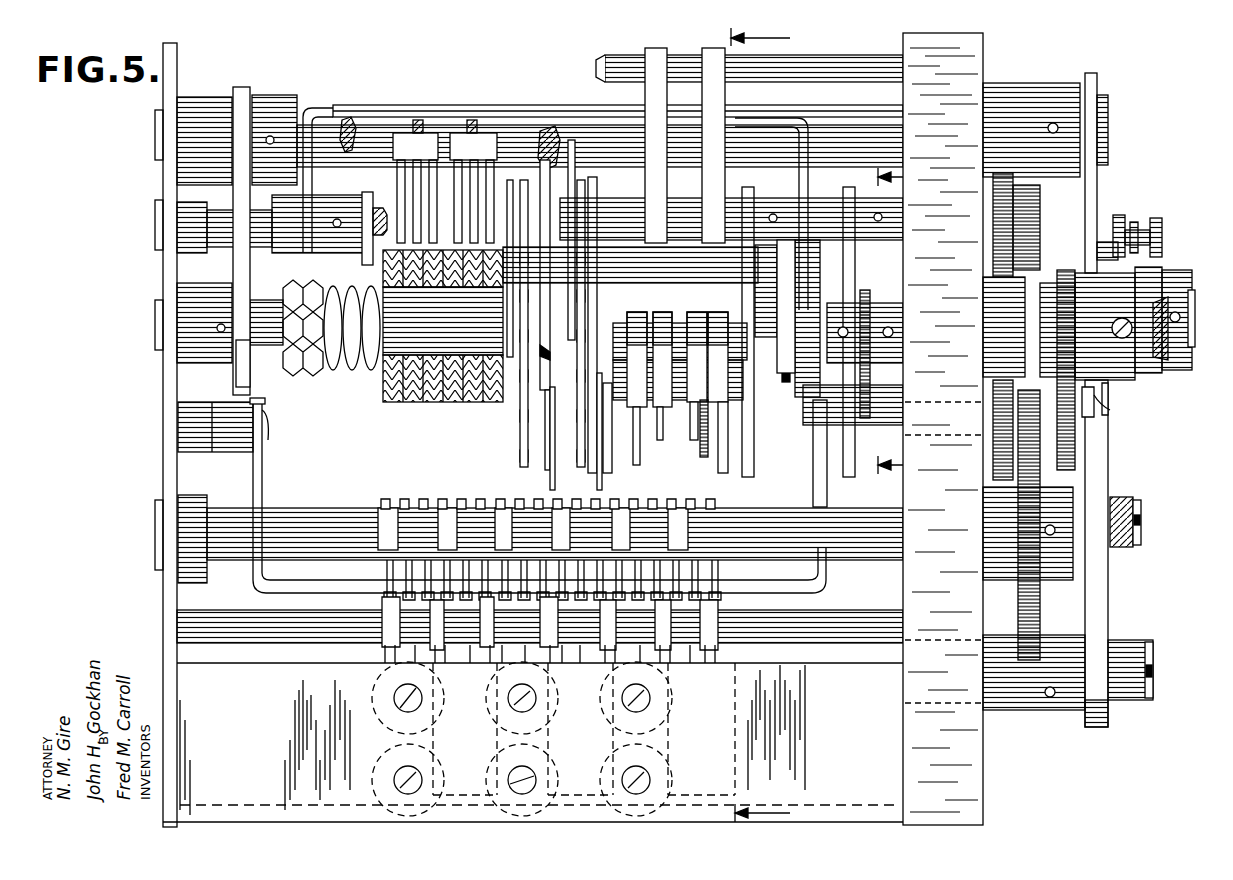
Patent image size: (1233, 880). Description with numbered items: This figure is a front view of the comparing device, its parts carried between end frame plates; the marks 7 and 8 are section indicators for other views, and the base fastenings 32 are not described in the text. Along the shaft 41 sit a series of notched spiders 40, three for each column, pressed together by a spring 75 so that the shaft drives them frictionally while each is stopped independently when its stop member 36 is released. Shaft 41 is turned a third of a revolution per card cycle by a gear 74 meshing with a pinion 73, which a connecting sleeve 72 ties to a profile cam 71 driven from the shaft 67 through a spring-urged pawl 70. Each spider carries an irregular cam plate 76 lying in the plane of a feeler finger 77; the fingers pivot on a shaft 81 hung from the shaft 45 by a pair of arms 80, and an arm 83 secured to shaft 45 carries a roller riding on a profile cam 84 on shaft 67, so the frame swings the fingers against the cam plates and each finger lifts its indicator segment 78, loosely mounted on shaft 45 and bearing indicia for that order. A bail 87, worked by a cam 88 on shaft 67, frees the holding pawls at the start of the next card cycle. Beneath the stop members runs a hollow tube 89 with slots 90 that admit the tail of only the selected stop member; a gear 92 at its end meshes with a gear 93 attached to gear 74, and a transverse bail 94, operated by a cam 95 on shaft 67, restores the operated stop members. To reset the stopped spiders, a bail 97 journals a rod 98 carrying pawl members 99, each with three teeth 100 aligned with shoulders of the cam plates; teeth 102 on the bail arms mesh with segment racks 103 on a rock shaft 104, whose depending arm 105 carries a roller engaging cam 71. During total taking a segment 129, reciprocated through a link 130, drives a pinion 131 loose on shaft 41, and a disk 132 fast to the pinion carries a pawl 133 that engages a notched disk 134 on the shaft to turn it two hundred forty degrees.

The section line 7- 7 is at (751, 426).
The section line 8- 8 is at (891, 323).
The mounting screws 32 is at (672, 762).
The stop member 36 is at (716, 499).
The spider 40 is at (388, 403).
The shaft 41 is at (1196, 350).
The shaft 45 is at (372, 212).
The shaft 67 is at (1148, 345).
The pawl 70 is at (1104, 418).
The profile cam 71 is at (1068, 452).
The connecting sleeve 72 is at (1123, 233).
The pinion 73 is at (1013, 333).
The gear 74 is at (1032, 230).
The spring 75 is at (338, 370).
The cam plate 76 is at (530, 195).
The feeler finger 77 is at (713, 400).
The indicator segment 78 is at (645, 58).
The arm 80 is at (366, 214).
The shaft 81 is at (543, 375).
The arm 83 is at (850, 215).
The profile cam 84 is at (865, 355).
The bail 87 is at (329, 110).
The cam 88 is at (805, 310).
The hollow tube 89 is at (769, 510).
The slot 90 is at (638, 508).
The gear 92 is at (1032, 605).
The gear 93 is at (1042, 285).
The bail 94 is at (826, 582).
The cam 95 is at (820, 325).
The bail 97 is at (424, 106).
The rod 98 is at (364, 157).
The pawl member 99 is at (450, 150).
The teeth 100 is at (488, 188).
The teeth 102 is at (250, 378).
The segment rack 103 is at (238, 268).
The rock shaft 104 is at (352, 125).
The depending arm 105 is at (1092, 190).
The segment 129 is at (1100, 585).
The link 130 is at (1125, 500).
The pinion 131 is at (1128, 248).
The disk 132 is at (1140, 254).
The pawl 133 is at (1118, 250).
The notched disk 134 is at (1148, 290).